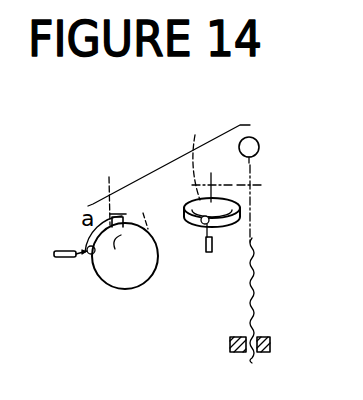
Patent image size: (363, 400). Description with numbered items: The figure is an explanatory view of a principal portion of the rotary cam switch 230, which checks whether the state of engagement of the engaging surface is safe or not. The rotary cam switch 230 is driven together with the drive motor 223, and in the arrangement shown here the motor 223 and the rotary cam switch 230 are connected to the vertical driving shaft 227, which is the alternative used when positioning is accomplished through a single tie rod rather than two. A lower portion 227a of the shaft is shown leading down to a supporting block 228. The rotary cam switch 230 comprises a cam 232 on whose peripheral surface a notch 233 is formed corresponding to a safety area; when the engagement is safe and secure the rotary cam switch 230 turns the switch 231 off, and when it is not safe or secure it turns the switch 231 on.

The drive motor 223 is at (258, 152).
The vertical driving shaft 227 is at (251, 242).
The flexible shaft 227a is at (253, 313).
The bearing blocks 228 is at (270, 342).
The rotary cam switch 230 is at (214, 250).
The switch 231 is at (63, 250).
The cam 232 is at (195, 210).
The notch 233 is at (148, 166).